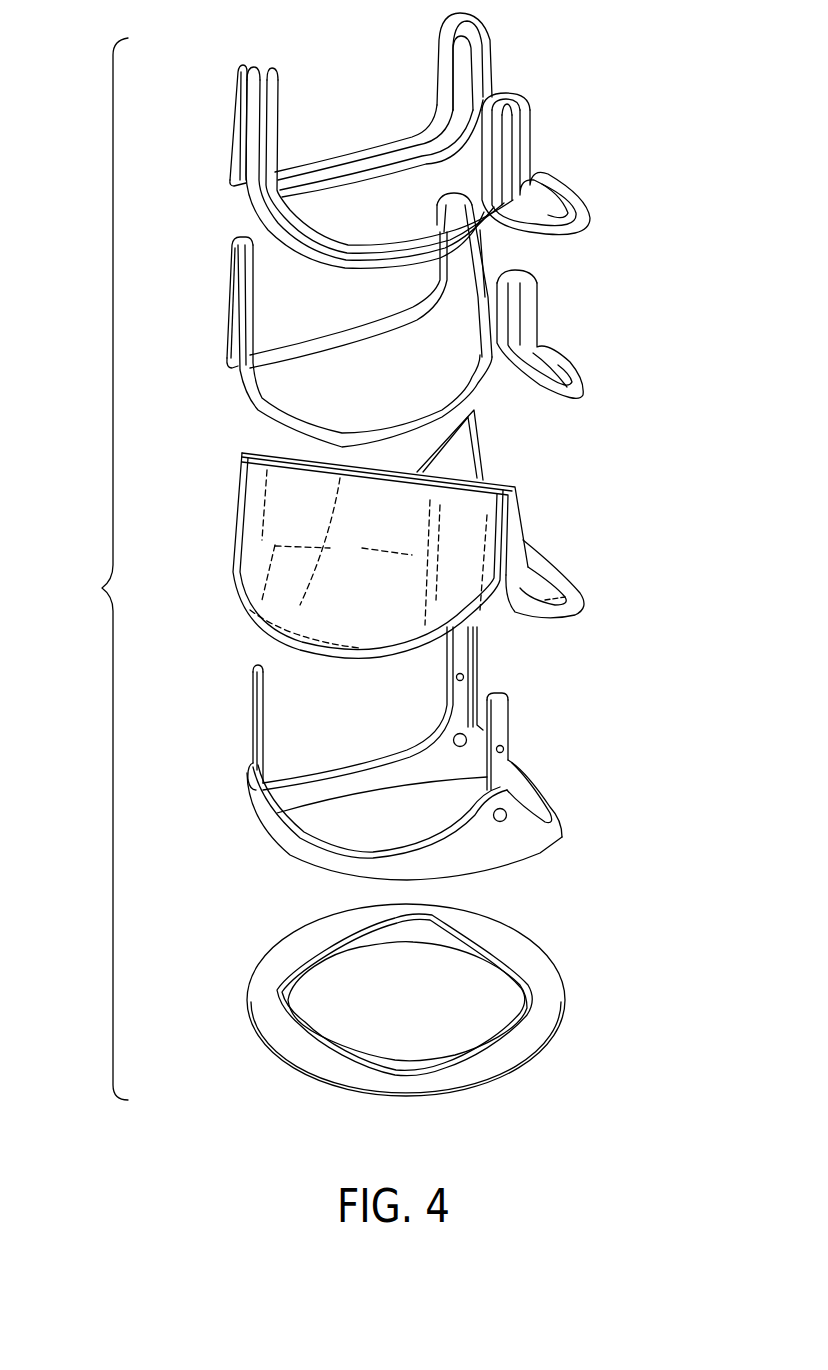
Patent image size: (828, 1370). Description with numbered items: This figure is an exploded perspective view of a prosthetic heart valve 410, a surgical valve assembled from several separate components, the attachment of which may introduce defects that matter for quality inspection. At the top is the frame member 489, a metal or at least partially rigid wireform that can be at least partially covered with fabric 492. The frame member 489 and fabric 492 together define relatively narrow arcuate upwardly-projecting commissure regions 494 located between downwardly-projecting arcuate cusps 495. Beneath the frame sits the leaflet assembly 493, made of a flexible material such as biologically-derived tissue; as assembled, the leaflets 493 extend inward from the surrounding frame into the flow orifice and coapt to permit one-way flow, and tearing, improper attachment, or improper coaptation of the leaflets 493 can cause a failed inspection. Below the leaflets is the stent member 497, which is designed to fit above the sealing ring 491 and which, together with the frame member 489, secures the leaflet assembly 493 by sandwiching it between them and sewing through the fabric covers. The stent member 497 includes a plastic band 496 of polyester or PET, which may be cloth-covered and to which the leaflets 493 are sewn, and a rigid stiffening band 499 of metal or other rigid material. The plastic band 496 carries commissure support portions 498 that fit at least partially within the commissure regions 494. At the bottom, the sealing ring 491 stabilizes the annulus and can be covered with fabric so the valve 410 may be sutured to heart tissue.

The prosthetic heart valve 410 is at (93, 569).
The frame member 489 is at (580, 332).
The sealing ring 491 is at (598, 1003).
The fabric 492 is at (440, 140).
The leaflet assembly 493 is at (615, 570).
The commissure regions 494 is at (525, 110).
The cusps 495 is at (361, 152).
The plastic band 496 is at (350, 787).
The stent member 497 is at (465, 649).
The commissure support portion 498 is at (503, 715).
The rigid stiffening band 499 is at (530, 850).